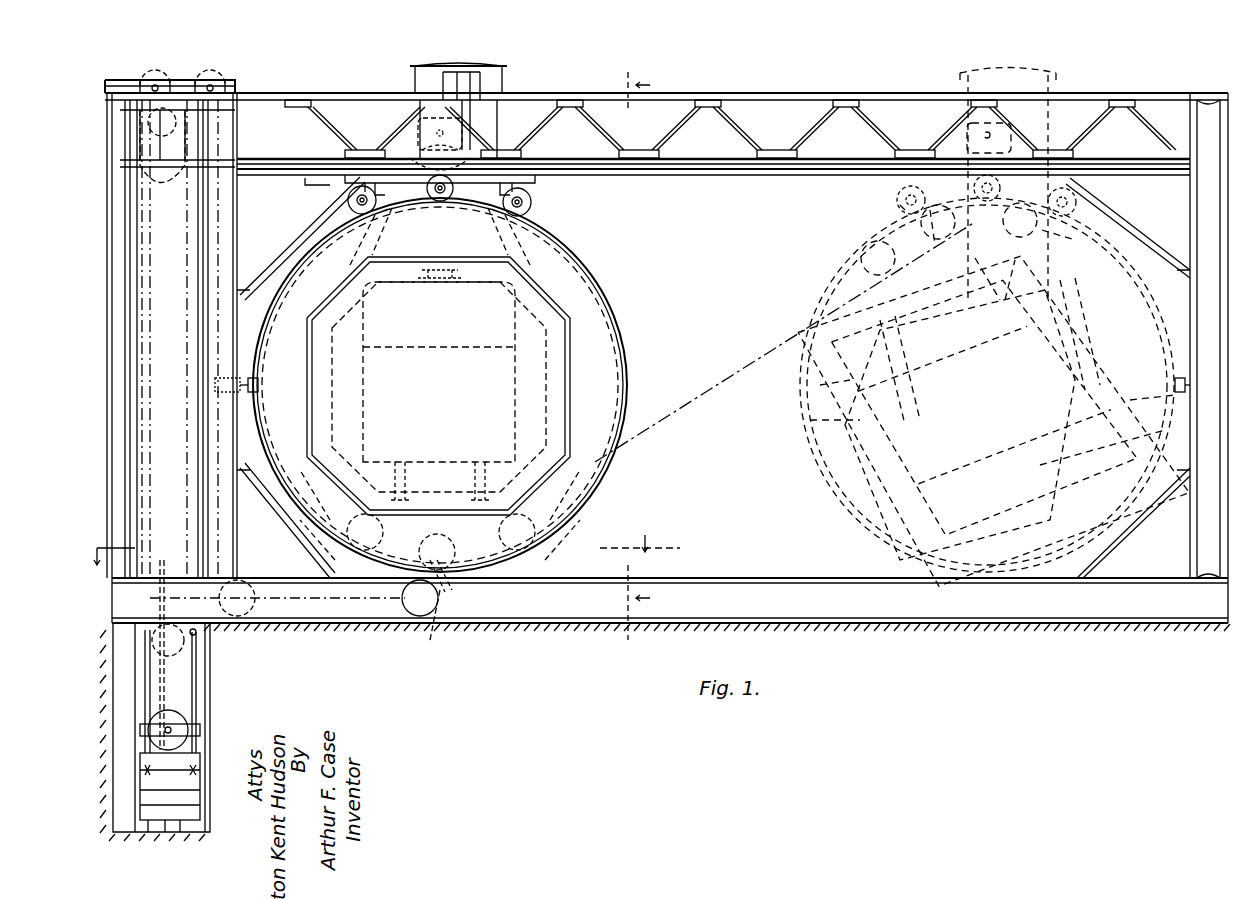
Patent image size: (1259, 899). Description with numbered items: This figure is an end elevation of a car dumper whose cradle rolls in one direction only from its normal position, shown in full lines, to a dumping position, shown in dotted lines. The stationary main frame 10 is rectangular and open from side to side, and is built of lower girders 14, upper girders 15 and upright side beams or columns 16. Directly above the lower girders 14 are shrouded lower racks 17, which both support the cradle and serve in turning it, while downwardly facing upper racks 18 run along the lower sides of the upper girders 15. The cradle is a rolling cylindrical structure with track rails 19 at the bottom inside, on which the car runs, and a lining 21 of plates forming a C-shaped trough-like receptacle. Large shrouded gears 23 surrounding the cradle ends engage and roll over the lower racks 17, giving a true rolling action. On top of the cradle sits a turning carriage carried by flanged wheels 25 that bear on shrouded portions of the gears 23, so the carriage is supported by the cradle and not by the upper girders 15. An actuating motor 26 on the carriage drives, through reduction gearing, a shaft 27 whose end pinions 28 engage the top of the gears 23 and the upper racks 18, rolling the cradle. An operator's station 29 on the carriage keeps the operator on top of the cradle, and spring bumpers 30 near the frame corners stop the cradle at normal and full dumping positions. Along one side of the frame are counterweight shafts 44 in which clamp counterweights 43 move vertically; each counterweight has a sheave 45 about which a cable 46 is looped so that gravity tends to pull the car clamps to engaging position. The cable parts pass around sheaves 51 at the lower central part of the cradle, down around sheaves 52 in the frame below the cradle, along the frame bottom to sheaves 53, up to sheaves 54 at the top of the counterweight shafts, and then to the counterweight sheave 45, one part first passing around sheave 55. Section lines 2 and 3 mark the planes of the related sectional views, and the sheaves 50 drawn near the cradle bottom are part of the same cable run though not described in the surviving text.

The ground 10 is at (940, 615).
The bottom beam 14 is at (670, 600).
The top chord truss 15 is at (758, 98).
The columns / braces 16 is at (228, 222).
The swing path line 17 is at (630, 250).
The lower chord track 18 is at (777, 178).
The platform legs 19 is at (408, 490).
The rotary frame ring 21 is at (540, 262).
The inner ring 23 is at (625, 335).
The carriage wheels 25 is at (352, 208).
The motor housing 26 is at (418, 145).
The carriage frame 27 is at (437, 200).
The center wheel 28 is at (453, 189).
The cab 29 is at (502, 78).
The side stops 30 is at (256, 386).
The pit box 43 is at (145, 772).
The left tower 44 is at (130, 378).
The pit sheave 45 is at (155, 732).
The cable 46 is at (150, 540).
The roller 50 is at (382, 517).
The roller 51 is at (499, 528).
The beam roller 52 is at (420, 618).
The beam roller 53 is at (248, 585).
The top pulley 54 is at (220, 78).
The top pulley 55 is at (142, 74).
The section line 2- 2 is at (633, 361).
The section line 3- 3 is at (390, 543).